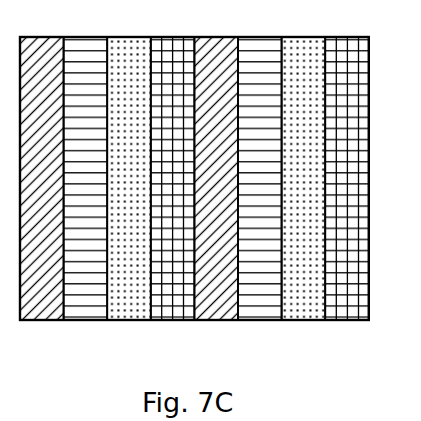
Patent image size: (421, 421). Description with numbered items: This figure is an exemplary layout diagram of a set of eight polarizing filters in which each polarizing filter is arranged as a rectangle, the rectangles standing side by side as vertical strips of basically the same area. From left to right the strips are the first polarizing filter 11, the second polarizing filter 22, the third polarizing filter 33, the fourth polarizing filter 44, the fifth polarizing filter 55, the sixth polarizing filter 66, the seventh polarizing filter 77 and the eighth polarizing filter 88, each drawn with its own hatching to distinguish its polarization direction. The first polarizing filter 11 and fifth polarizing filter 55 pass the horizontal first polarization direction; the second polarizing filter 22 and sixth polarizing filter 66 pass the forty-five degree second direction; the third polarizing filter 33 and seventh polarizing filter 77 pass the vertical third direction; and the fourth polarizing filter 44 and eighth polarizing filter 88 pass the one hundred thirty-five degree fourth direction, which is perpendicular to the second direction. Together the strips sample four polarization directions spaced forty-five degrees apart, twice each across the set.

The first polarizing filter 11 is at (42, 178).
The second polarizing filter 22 is at (86, 178).
The third polarizing filter 33 is at (129, 178).
The fourth polarizing filter 44 is at (173, 178).
The fifth polarizing filter 55 is at (216, 178).
The sixth polarizing filter 66 is at (260, 178).
The seventh polarizing filter 77 is at (304, 178).
The eighth polarizing filter 88 is at (347, 178).